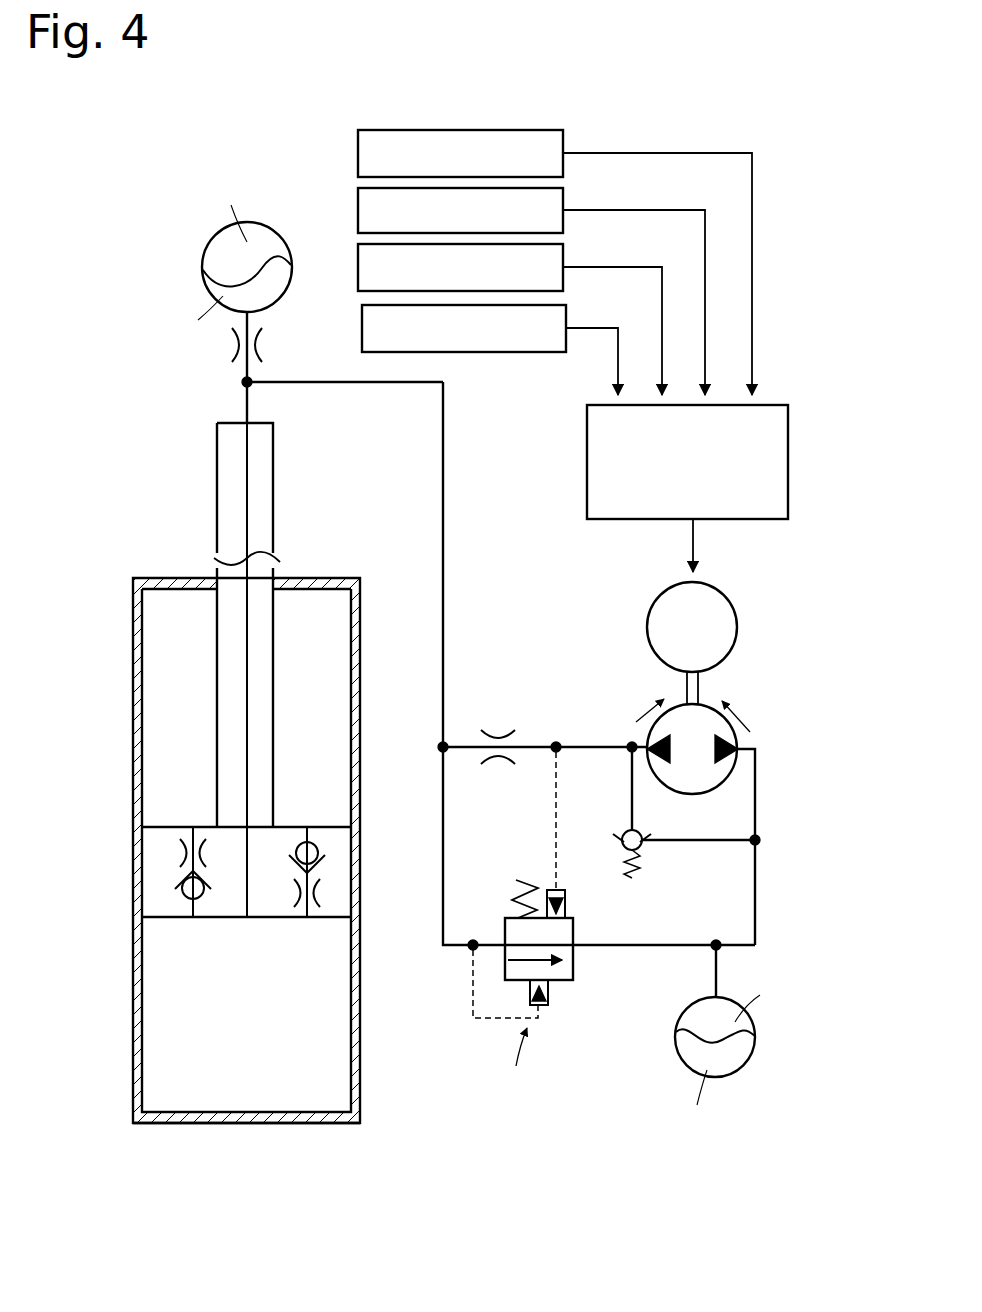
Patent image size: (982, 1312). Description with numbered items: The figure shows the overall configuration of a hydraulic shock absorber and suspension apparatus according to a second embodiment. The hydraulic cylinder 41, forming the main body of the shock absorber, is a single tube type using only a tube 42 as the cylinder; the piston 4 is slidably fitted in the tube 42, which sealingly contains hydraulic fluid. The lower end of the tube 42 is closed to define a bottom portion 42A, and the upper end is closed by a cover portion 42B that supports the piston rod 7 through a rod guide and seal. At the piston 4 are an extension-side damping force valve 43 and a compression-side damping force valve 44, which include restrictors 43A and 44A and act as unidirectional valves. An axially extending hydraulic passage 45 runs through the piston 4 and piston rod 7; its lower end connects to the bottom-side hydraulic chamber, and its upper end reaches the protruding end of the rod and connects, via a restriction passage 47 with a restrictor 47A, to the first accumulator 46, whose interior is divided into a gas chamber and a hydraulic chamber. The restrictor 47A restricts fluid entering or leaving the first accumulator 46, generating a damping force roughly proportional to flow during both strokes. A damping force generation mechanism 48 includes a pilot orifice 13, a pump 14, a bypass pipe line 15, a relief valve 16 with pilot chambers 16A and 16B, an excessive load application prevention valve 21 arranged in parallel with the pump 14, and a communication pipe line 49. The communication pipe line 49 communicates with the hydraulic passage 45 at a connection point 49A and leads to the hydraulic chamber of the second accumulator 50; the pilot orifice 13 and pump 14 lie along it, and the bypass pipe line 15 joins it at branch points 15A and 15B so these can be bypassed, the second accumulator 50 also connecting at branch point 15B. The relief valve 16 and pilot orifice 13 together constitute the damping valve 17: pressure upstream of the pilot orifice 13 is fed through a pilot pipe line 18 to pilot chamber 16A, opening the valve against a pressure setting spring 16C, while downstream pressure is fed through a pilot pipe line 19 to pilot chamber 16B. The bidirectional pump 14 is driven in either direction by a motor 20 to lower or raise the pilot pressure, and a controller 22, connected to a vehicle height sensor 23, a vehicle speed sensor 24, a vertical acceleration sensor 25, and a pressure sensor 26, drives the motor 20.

The piston 4 is at (232, 918).
The piston rod 7 is at (265, 482).
The pilot orifice 13 is at (498, 733).
The pump 14 is at (710, 702).
The bypass pipe line 15 is at (443, 948).
The branch point 15A is at (443, 746).
The branch point 15B is at (712, 960).
The relief valve 16 is at (574, 958).
The pilot chamber 16A is at (549, 996).
The pilot chamber 16B is at (566, 904).
The pressure setting spring 16C is at (516, 882).
The damping valve 17 is at (513, 1062).
The pilot pipe line 18 is at (471, 1016).
The pilot pipe line 19 is at (554, 826).
The motor 20 is at (734, 608).
The excessive load application prevention valve 21 is at (645, 847).
The controller 22 is at (587, 466).
The vehicle height sensor 23 is at (358, 156).
The vehicle speed sensor 24 is at (358, 212).
The vertical acceleration sensor 25 is at (358, 268).
The pressure sensor 26 is at (452, 353).
The hydraulic cylinder 41 is at (240, 785).
The tube 42 is at (133, 745).
The bottom portion 42A is at (240, 1125).
The cover portion 42B is at (207, 578).
The extension-side damping force valve 43 is at (181, 890).
The restrictor 43A is at (181, 855).
The compression-side damping force valve 44 is at (318, 846).
The restrictor 44A is at (321, 893).
The hydraulic passage 45 is at (270, 560).
The first accumulator 46 is at (212, 246).
The restriction passage 47 is at (240, 358).
The restrictor 47A is at (264, 350).
The damping force generation mechanism 48 is at (578, 735).
The communication pipe line 49 is at (758, 858).
The connection point 49A is at (252, 386).
The second accumulator 50 is at (748, 1062).